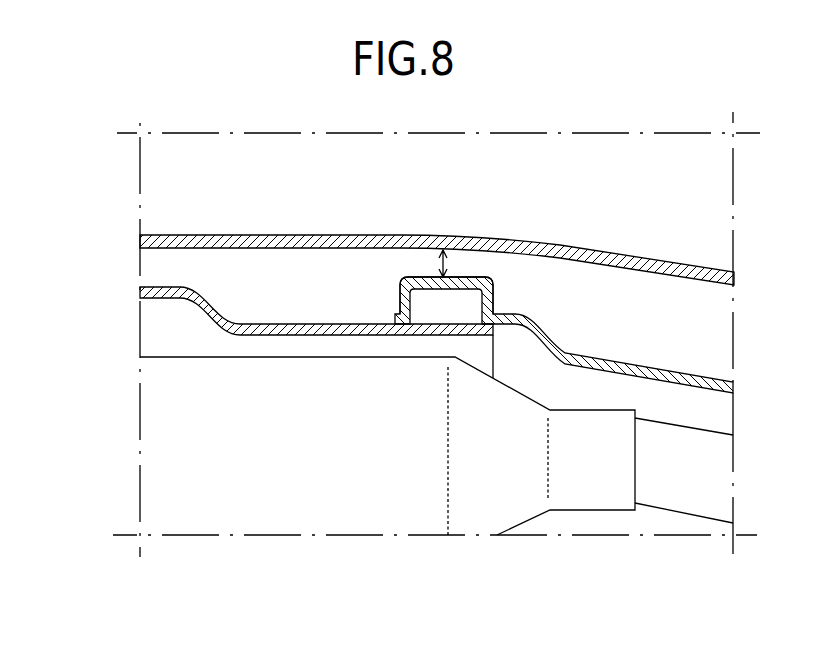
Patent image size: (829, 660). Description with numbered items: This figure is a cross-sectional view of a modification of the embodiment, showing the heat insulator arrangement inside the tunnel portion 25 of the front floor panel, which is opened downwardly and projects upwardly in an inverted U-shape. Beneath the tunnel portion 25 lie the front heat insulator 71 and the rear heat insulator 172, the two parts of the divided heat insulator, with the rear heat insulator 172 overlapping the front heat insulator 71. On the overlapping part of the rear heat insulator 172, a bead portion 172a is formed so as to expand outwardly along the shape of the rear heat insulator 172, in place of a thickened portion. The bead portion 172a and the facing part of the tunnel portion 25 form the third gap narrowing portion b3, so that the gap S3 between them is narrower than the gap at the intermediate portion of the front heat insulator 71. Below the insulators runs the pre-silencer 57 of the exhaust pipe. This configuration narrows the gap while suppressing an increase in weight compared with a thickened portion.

The tunnel portion 25 is at (292, 235).
The front heat insulator 71 is at (158, 287).
The rear heat insulator 172 is at (564, 294).
The bead portion 172a is at (494, 298).
The gap S3 is at (441, 262).
The third gap narrowing portion b3 is at (481, 214).
The pre-silencer 57 is at (386, 520).